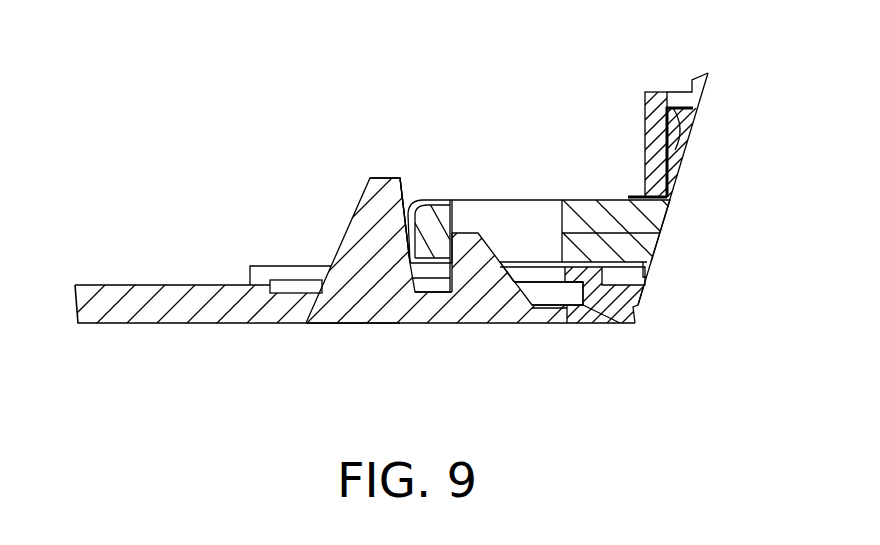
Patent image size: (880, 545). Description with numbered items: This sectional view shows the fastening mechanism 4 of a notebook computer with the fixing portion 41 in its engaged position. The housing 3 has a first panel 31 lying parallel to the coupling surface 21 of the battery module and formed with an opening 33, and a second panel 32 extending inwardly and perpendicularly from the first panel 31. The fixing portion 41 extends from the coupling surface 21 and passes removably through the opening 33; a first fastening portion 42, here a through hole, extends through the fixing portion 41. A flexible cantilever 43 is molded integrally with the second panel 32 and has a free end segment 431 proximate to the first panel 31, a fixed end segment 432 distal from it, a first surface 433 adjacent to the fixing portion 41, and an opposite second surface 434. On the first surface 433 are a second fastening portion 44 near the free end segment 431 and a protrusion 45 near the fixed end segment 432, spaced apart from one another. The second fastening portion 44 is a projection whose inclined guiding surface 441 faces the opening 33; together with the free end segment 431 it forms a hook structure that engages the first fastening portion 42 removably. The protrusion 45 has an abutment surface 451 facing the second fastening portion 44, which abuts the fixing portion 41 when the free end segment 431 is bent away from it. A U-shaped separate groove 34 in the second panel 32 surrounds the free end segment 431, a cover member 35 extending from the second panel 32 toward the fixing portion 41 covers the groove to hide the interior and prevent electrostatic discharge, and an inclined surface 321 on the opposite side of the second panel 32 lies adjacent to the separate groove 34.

The housing 3 is at (381, 229).
The fastening mechanism 4 is at (505, 203).
The coupling surface 21 is at (682, 110).
The first panel 31 is at (650, 130).
The second panel 32 is at (173, 298).
The opening 33 is at (643, 197).
The separate groove 34 is at (582, 323).
The cover member 35 is at (260, 265).
The inclined surface 321 is at (607, 327).
The fixing portion 41 is at (433, 220).
The first fastening portion 42 is at (532, 220).
The cantilever 43 is at (325, 325).
The second fastening portion 44 is at (470, 263).
The protrusion 45 is at (350, 215).
The abutment surface 451 is at (405, 187).
The free end segment 431 is at (552, 323).
The fixed end segment 432 is at (273, 307).
The first surface 433 is at (430, 285).
The second surface 434 is at (392, 325).
The inclined guiding surface 441 is at (500, 258).